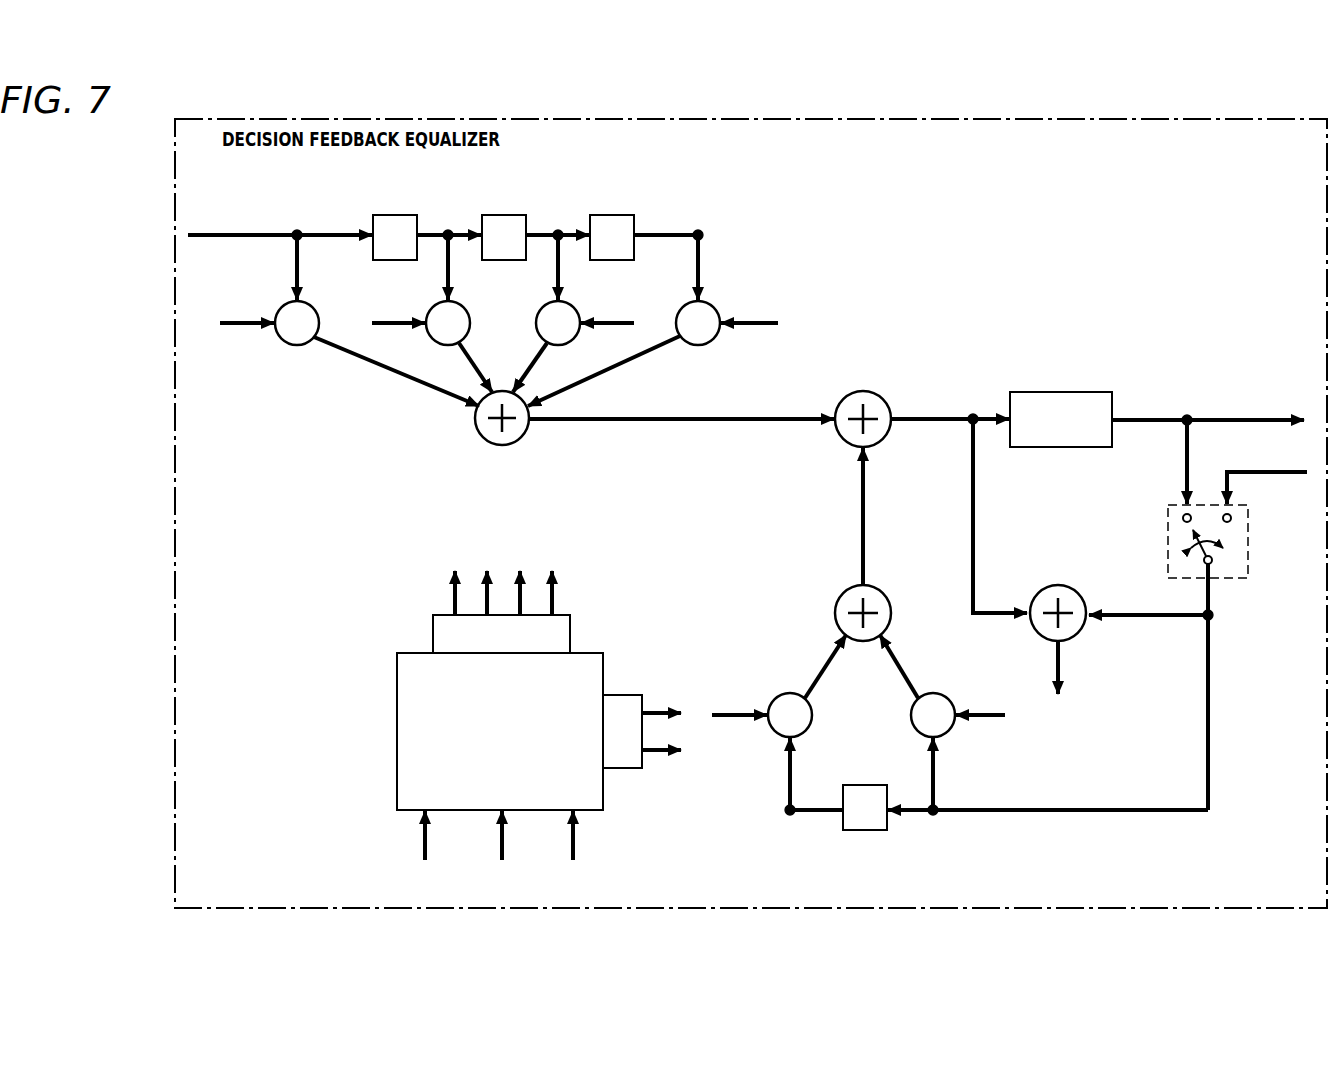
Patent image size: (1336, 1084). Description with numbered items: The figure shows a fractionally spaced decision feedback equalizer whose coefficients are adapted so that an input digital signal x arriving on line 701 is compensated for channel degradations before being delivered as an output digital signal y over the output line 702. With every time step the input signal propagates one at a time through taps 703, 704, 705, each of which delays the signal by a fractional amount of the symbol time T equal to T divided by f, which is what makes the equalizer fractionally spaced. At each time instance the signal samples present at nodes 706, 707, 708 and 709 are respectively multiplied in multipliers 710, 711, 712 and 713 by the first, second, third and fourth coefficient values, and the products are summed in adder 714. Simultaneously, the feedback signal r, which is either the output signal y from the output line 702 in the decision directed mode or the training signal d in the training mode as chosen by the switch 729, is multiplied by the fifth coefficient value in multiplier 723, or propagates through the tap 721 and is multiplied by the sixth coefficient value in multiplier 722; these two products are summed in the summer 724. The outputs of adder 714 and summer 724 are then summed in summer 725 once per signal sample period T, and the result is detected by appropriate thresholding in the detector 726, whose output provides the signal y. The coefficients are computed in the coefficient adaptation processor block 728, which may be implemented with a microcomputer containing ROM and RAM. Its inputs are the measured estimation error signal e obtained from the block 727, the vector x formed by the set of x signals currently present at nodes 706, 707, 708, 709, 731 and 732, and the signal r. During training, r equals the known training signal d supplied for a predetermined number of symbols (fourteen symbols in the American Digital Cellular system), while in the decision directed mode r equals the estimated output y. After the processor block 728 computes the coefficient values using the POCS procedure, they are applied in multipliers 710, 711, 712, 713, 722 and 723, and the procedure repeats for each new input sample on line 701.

The input line 701 is at (240, 244).
The output line 702 is at (1222, 425).
The tap 703 is at (385, 214).
The tap 704 is at (494, 214).
The tap 705 is at (605, 214).
The node 706 is at (300, 228).
The node 707 is at (449, 230).
The node 708 is at (559, 230).
The node 709 is at (702, 231).
The multiplier 710 is at (284, 350).
The multiplier 711 is at (435, 310).
The multiplier 712 is at (574, 310).
The multiplier 713 is at (708, 344).
The adder 714 is at (474, 432).
The tap 721 is at (870, 832).
The multiplier 722 is at (776, 698).
The multiplier 723 is at (912, 716).
The summer 724 is at (842, 597).
The summer 725 is at (836, 406).
The detector 726 is at (1061, 391).
The error block 727 is at (1054, 585).
The coefficient adaptation processor block 728 is at (396, 752).
The switch 729 is at (1168, 535).
The node 731 is at (935, 816).
The node 732 is at (786, 816).